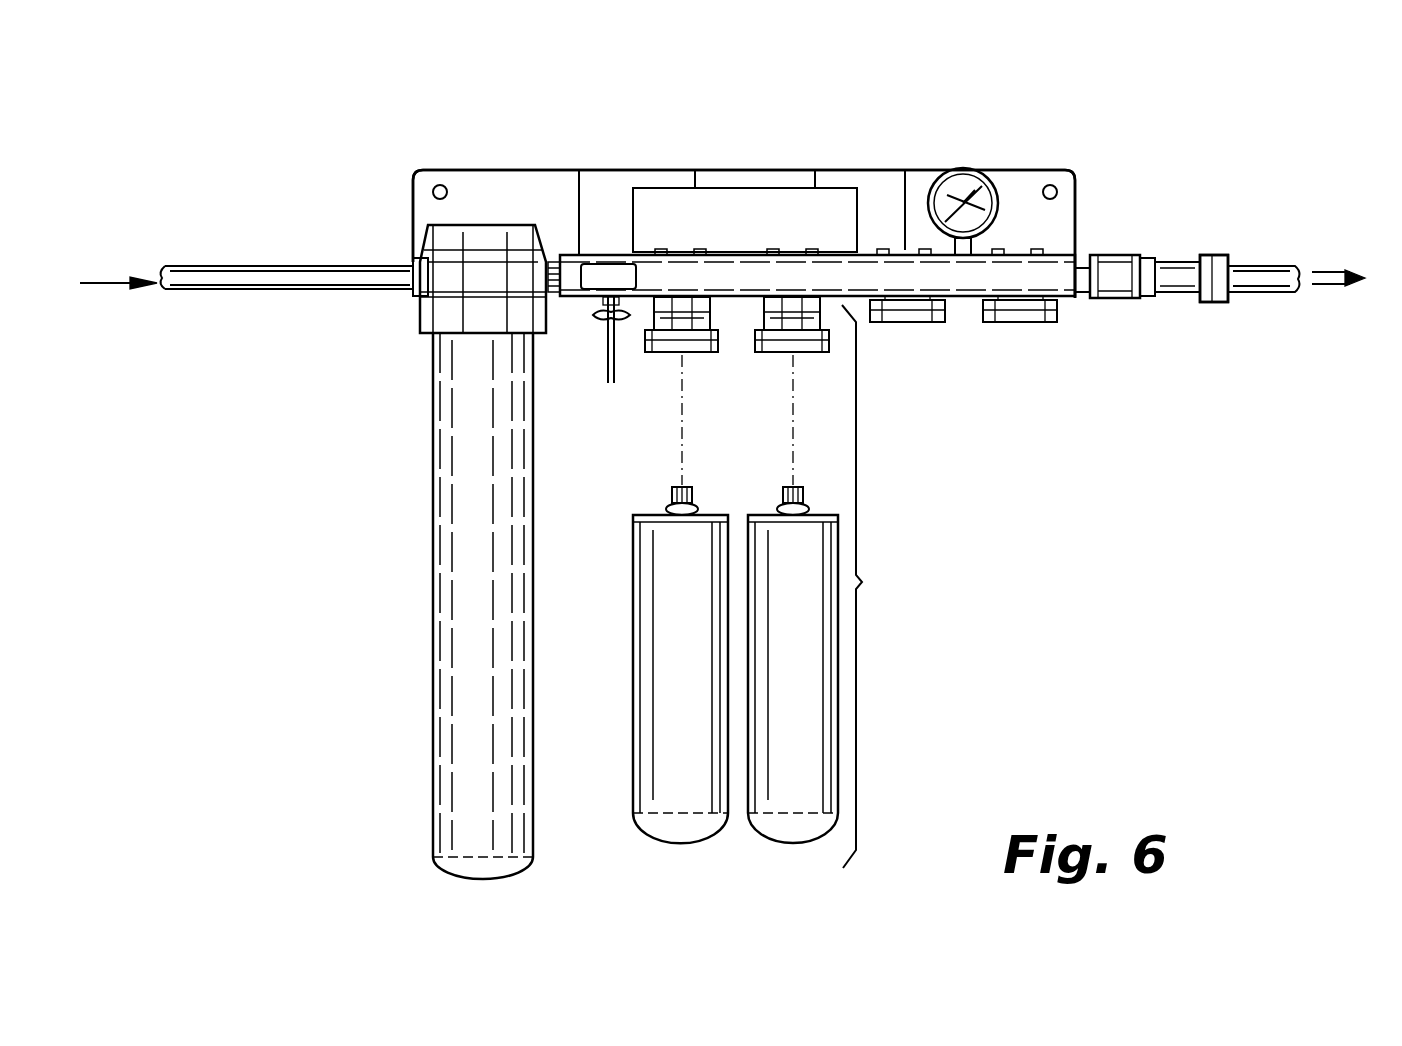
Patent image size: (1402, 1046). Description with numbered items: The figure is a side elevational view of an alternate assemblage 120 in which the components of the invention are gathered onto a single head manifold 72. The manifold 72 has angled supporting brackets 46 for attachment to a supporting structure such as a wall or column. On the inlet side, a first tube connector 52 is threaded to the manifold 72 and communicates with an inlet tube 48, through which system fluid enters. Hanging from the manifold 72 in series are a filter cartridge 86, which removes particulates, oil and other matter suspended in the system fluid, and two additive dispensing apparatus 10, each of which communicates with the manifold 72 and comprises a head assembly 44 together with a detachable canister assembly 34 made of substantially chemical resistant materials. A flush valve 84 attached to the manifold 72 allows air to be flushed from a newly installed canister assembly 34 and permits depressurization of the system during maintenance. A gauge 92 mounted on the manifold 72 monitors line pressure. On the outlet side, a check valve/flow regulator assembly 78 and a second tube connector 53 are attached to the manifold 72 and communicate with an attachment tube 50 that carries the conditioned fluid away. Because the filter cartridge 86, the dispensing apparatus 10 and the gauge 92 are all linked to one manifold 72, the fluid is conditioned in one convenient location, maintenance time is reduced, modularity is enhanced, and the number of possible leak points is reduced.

The alternate assemblage 120 is at (358, 160).
The angled supporting brackets 46 is at (505, 185).
The head manifold 72 is at (737, 272).
The gauge 92 is at (1003, 190).
The inlet tube 48 is at (227, 280).
The first tube connector 52 is at (410, 265).
The filter cartridge 86 is at (435, 700).
The flush valve 84 is at (607, 340).
The head assembly 44 is at (660, 352).
The detachable canister assembly 34 is at (652, 828).
The additive dispensing apparatus 10 is at (873, 586).
The check valve/flow regulator assembly 78 is at (1201, 226).
The second tube connector 53 is at (1225, 258).
The attachment tube 50 is at (1268, 290).